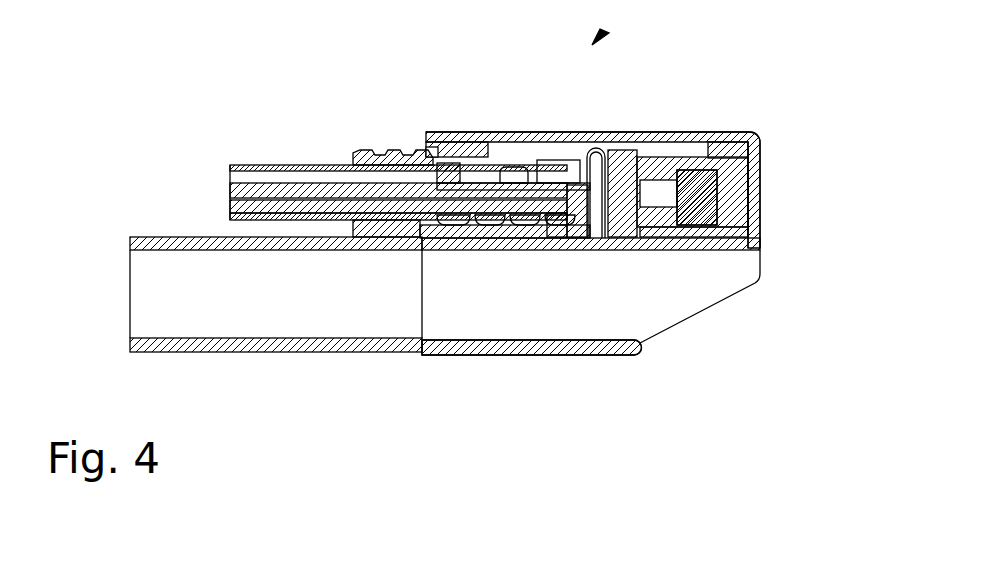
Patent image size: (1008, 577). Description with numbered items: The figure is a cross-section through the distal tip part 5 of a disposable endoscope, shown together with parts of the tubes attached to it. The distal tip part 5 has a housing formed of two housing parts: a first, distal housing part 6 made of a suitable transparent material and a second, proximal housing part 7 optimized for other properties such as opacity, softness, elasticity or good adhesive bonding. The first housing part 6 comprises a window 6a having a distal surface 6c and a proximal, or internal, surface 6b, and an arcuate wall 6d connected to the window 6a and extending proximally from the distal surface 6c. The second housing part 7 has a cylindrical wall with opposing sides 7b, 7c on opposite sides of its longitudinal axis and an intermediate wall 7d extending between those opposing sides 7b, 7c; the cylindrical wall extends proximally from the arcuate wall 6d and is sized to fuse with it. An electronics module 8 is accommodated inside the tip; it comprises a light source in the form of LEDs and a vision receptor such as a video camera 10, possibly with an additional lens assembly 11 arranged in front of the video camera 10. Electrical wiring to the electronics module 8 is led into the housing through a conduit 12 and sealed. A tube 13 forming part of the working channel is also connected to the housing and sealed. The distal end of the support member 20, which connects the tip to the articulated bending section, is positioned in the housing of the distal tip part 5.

The distal tip part 5 is at (690, 100).
The first housing part 6 is at (730, 138).
The window 6a is at (775, 190).
The proximal surface 6b is at (742, 190).
The distal surface 6c is at (762, 163).
The arcuate wall 6d is at (715, 138).
The second housing part 7 is at (563, 355).
The opposing side 7b is at (492, 132).
The opposing side 7c is at (475, 355).
The intermediate wall 7d is at (623, 223).
The electronics module 8 is at (524, 148).
The video camera 10 is at (622, 252).
The lens assembly 11 is at (713, 203).
The conduit 12 is at (255, 167).
The tube 13 is at (240, 352).
The support member 20 is at (397, 135).